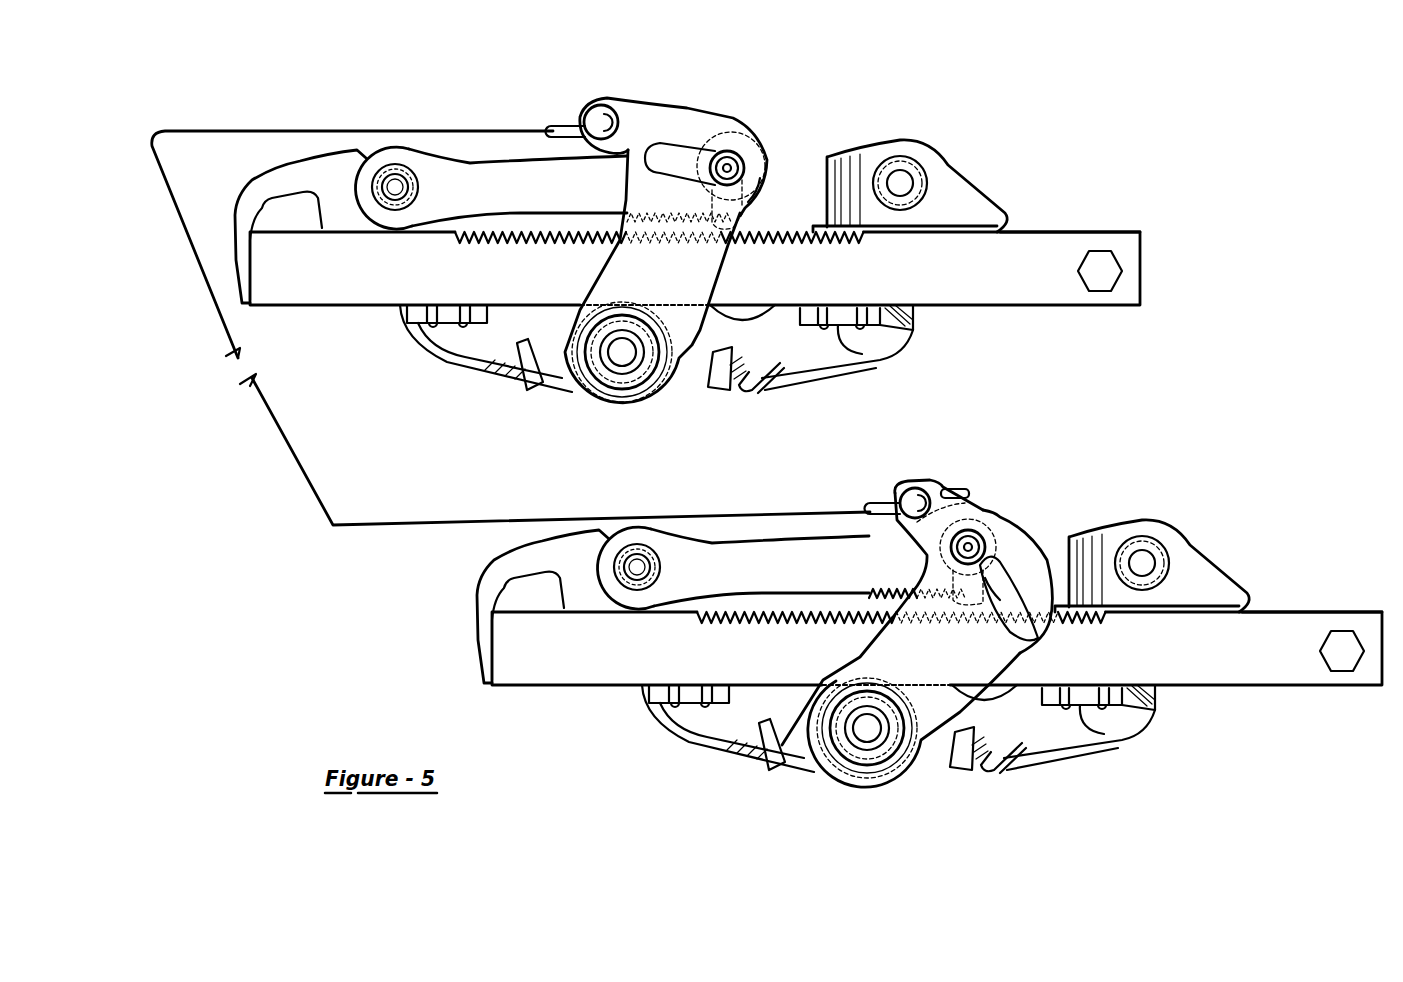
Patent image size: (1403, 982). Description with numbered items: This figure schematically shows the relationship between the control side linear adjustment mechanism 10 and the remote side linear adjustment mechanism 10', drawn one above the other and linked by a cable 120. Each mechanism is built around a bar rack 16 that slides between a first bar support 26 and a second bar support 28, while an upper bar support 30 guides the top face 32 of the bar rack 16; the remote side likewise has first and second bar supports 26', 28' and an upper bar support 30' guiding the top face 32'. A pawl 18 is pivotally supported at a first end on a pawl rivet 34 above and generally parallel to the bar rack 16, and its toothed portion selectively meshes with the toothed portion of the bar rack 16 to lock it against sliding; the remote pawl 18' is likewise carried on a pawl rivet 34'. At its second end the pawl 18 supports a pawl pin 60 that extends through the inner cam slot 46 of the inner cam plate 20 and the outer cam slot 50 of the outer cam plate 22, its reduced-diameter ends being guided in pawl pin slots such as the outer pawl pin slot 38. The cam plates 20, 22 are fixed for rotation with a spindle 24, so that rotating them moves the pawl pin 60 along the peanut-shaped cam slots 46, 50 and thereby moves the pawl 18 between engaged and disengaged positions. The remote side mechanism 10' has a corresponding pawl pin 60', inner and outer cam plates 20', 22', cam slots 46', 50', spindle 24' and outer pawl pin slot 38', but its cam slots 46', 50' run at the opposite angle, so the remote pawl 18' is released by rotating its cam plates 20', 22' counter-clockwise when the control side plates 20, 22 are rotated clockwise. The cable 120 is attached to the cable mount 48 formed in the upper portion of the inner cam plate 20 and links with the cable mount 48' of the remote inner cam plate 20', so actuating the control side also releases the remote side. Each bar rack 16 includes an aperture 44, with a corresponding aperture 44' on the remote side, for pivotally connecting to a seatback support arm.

The linear adjustment mechanism 10 is at (894, 656).
The remote side linear adjustment mechanism 10' is at (679, 249).
The bar rack 16 is at (1243, 643).
The pawl 18 is at (686, 568).
The pawl 18' is at (474, 182).
The inner cam plate 20 is at (1023, 559).
The inner cam plate 20' is at (734, 140).
The outer cam plate 22 is at (901, 644).
The outer cam plate 22' is at (652, 249).
The spindle 24 is at (867, 768).
The spindle 24' is at (651, 376).
The first bar support 26 is at (1079, 756).
The first bar support 26' is at (843, 355).
The second bar support 28 is at (725, 755).
The second bar support 28' is at (486, 362).
The upper bar support 30 is at (1171, 551).
The upper bar support 30' is at (930, 170).
The top face 32 is at (1312, 564).
The top face 32' is at (1070, 185).
The pawl rivet 34 is at (533, 561).
The pawl rivet 34' is at (318, 174).
The outer pawl pin slot 38 is at (1056, 540).
The outer pawl pin slot 38' is at (818, 150).
The aperture 44 is at (1340, 713).
The aperture 44' is at (1100, 335).
The inner cam slot 46 is at (1010, 584).
The inner cam slot 46' is at (552, 117).
The cable mount 48 is at (922, 474).
The cable mount 48' is at (598, 97).
The outer cam slot 50 is at (1023, 584).
The outer cam slot 50' is at (555, 106).
The pawl pin 60 is at (1003, 508).
The pawl pin 60' is at (763, 130).
The cable 120 is at (200, 245).